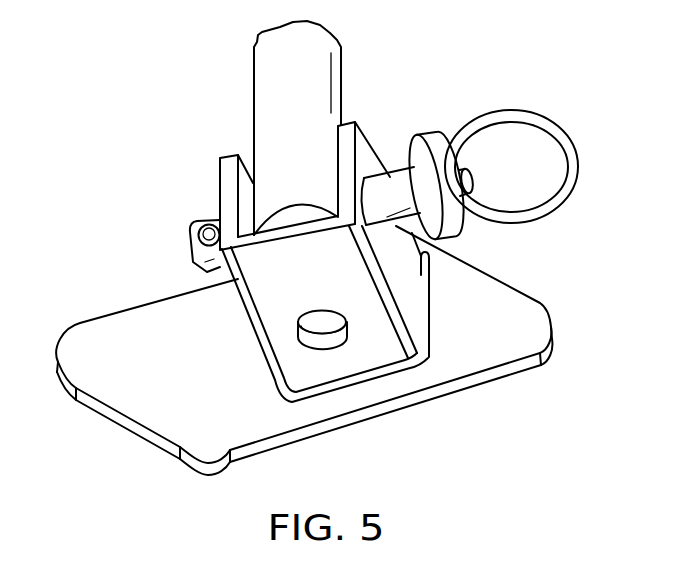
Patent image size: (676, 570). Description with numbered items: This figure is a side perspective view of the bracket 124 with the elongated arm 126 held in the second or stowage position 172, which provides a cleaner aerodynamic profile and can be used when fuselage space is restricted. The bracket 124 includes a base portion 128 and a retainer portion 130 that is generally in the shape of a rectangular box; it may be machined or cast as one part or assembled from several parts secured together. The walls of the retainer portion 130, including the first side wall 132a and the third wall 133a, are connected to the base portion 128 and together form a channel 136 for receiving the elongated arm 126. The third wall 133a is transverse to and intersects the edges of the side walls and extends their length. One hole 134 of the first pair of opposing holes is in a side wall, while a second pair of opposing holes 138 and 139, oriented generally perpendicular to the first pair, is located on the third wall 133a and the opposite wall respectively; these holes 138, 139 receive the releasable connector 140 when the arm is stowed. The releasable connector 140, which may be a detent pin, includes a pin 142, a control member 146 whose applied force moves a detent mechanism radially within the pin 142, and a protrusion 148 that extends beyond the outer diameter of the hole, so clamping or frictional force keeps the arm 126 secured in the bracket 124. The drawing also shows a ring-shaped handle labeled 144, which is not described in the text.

The bracket 124 is at (296, 350).
The elongated arm 126 is at (246, 86).
The base portion 128 is at (140, 398).
The retainer portion 130 is at (381, 344).
The first side wall 132a is at (368, 142).
The third wall 133a is at (407, 299).
The hole 134 is at (325, 338).
The channel 136 is at (247, 188).
The hole 138 is at (363, 177).
The hole 139 is at (220, 220).
The releasable connector 140 is at (448, 220).
The pin 142 is at (392, 167).
The pin 144 is at (472, 181).
The control member 146 is at (513, 110).
The protrusion 148 is at (164, 247).
The stowage position 172 is at (309, 253).